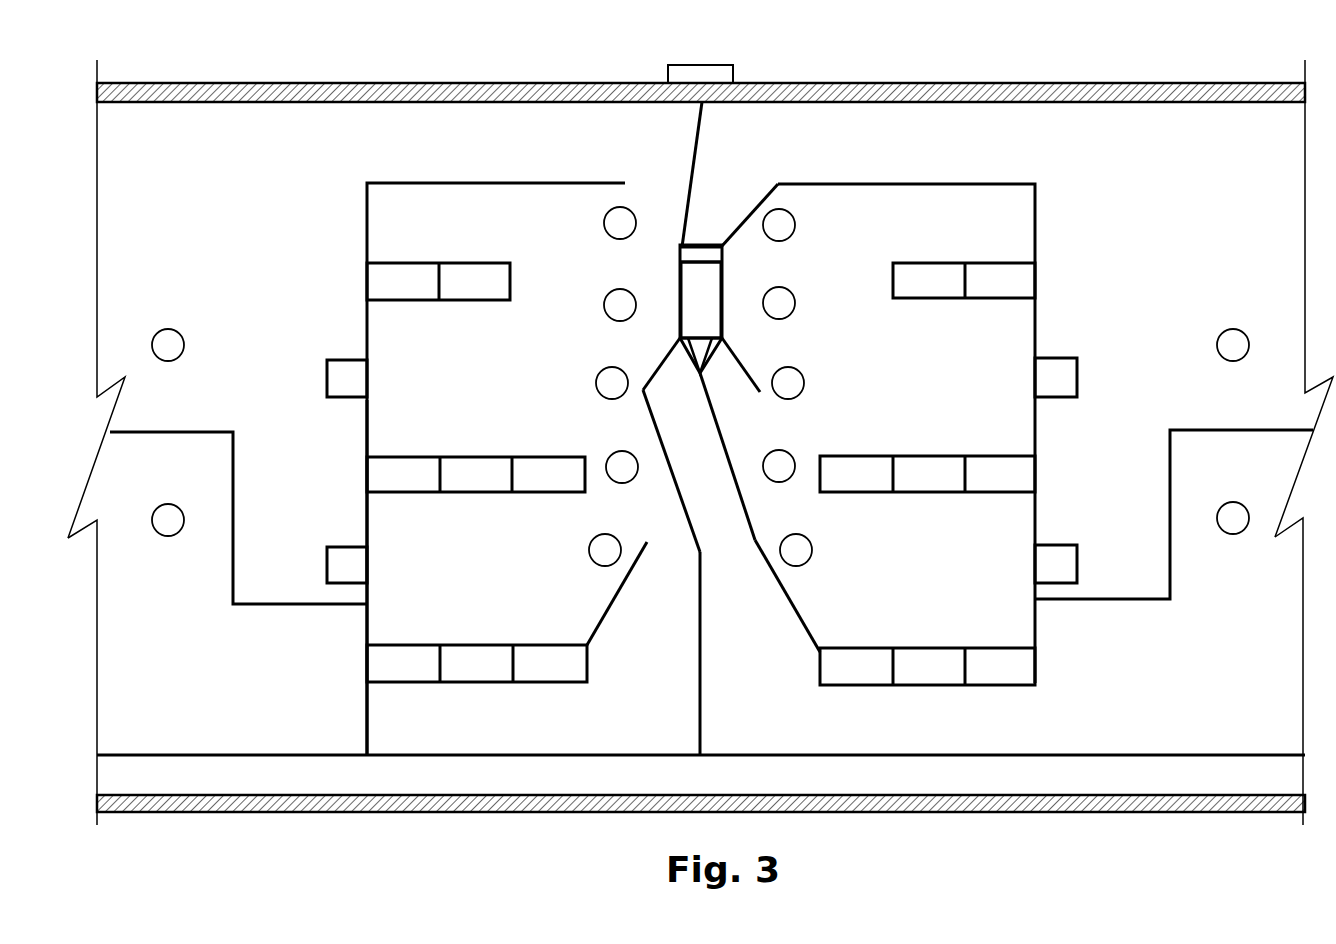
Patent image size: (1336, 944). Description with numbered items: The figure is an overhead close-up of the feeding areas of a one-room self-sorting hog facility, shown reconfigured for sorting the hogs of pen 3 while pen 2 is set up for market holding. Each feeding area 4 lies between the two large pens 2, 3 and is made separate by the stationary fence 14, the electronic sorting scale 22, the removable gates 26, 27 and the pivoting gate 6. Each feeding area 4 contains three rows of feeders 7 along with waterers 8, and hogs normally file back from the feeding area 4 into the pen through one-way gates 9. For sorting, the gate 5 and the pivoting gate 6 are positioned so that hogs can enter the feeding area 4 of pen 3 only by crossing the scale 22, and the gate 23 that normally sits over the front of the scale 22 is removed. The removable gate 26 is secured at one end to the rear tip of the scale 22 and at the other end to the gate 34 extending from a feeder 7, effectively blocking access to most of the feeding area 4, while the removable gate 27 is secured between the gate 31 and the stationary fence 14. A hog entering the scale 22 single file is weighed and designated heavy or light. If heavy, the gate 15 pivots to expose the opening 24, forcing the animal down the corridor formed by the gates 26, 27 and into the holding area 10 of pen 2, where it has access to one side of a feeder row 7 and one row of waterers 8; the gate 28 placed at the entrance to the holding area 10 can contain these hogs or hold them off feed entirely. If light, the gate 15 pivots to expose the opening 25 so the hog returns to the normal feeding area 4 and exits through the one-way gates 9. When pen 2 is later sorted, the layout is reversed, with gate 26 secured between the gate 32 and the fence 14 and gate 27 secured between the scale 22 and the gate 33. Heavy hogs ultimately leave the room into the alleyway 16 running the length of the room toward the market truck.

The pen 2 is at (177, 191).
The pen 3 is at (1195, 231).
The feeding area 4 is at (429, 351).
The gate 5 is at (745, 222).
The pivoting gate 6 is at (691, 160).
The feeder 7 is at (437, 285).
The waterer 8 is at (591, 556).
The one-way gate 9 is at (330, 377).
The holding area 10 is at (196, 681).
The stationary fence 14 is at (705, 665).
The gate 15 is at (682, 337).
The alleyway 16 is at (520, 778).
The electronic sorting scale 22 is at (706, 288).
The gate 23 is at (704, 245).
The opening 24 is at (700, 378).
The opening 25 is at (708, 380).
The removable gate 26 is at (735, 470).
The removable gate 27 is at (660, 438).
The gate 28 is at (367, 722).
The gate 31 is at (659, 367).
The gate 32 is at (745, 366).
The gate 33 is at (617, 595).
The gate 34 is at (790, 598).